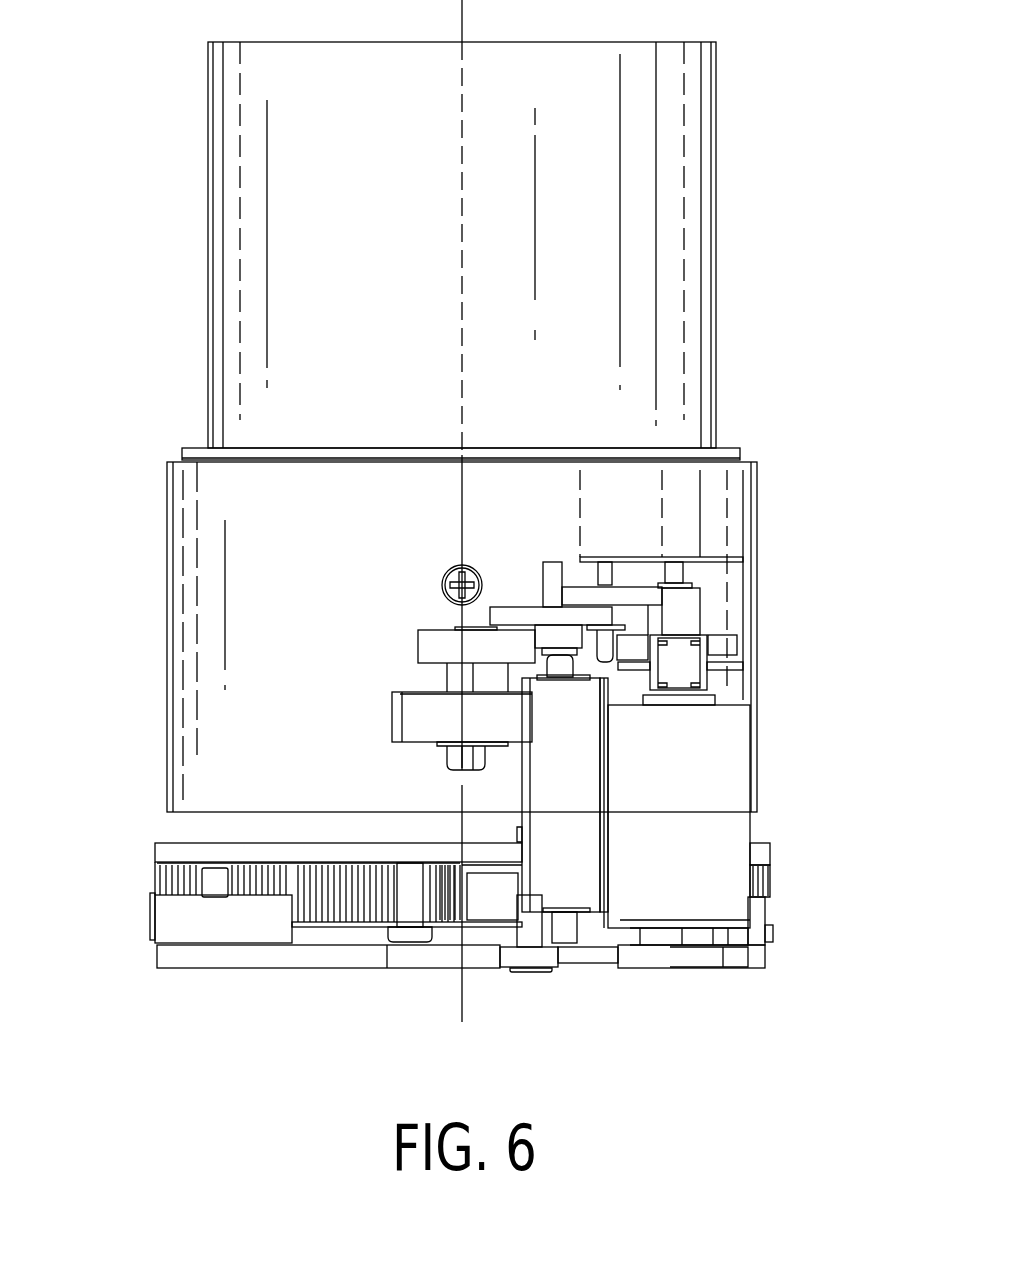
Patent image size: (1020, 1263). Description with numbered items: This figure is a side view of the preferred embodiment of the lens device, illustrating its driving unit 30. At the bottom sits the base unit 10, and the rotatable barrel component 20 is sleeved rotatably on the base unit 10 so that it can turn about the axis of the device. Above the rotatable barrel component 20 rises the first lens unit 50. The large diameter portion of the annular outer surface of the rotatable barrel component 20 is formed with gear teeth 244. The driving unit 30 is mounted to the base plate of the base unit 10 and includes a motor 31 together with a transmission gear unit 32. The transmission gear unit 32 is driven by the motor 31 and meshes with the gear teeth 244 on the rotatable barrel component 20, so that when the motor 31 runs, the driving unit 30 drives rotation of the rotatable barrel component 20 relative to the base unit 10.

The base unit 10 is at (197, 970).
The rotatable barrel component 20 is at (172, 520).
The gear teeth 244 is at (340, 907).
The driving unit 30 is at (750, 740).
The motor 31 is at (730, 788).
The transmission gear unit 32 is at (403, 716).
The first lens unit 50 is at (217, 173).